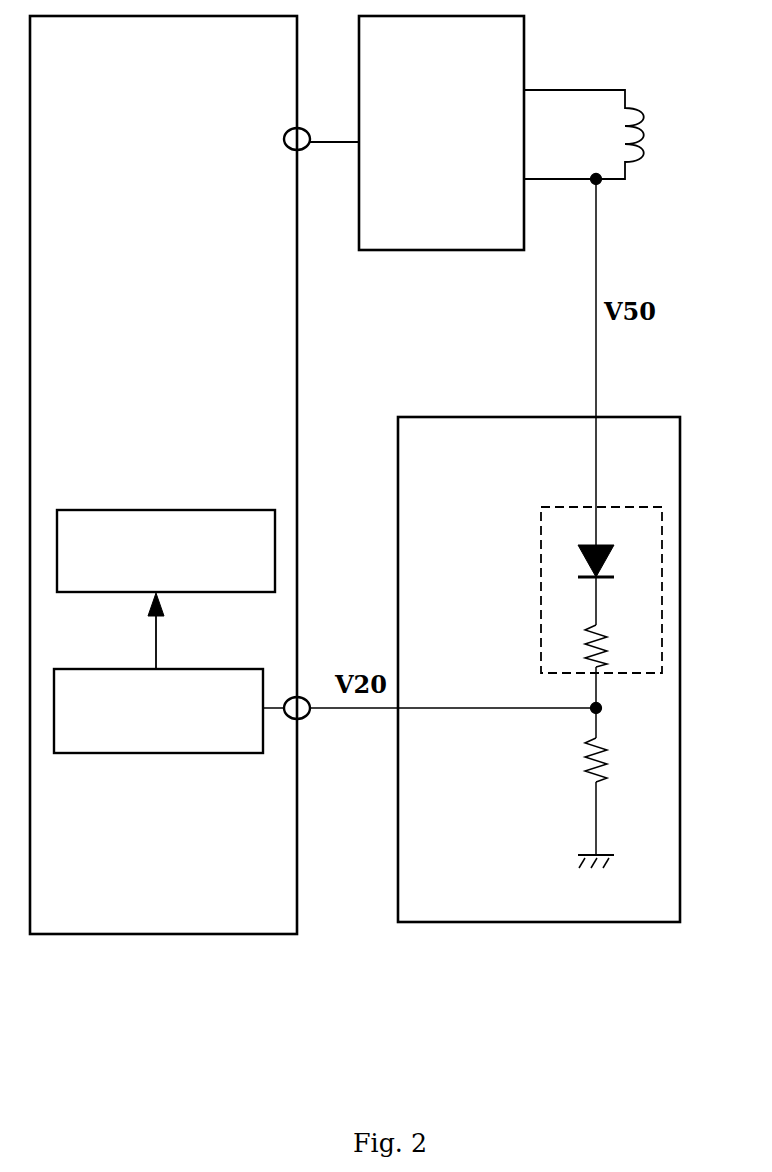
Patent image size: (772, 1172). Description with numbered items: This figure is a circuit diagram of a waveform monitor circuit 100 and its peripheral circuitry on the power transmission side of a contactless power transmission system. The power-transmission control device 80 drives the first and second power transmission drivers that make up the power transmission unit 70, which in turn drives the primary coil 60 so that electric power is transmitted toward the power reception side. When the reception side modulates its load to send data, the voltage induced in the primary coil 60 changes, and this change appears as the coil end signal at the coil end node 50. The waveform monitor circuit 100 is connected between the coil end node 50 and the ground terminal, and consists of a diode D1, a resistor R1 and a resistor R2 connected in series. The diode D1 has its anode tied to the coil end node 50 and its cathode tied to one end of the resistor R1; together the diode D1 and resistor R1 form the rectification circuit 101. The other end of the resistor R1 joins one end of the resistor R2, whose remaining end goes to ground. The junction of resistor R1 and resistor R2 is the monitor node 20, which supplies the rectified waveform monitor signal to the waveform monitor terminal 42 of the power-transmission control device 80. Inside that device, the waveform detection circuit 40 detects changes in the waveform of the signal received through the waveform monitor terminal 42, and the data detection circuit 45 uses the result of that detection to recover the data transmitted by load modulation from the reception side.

The power-transmission control device 80 is at (298, 343).
The power transmission unit 70 is at (423, 250).
The primary coil 60 is at (650, 140).
The coil end node 50 is at (600, 183).
The waveform monitor circuit 100 is at (680, 562).
The rectification circuit 101 is at (540, 605).
The monitor node 20 is at (602, 706).
The data detection circuit 45 is at (237, 595).
The waveform detection circuit 40 is at (232, 757).
The waveform monitor terminal 42 is at (300, 720).
The diode D1 is at (615, 566).
The resistor R1 (second resistor) R1 is at (618, 666).
The resistor R2 (first resistor) R2 is at (620, 788).